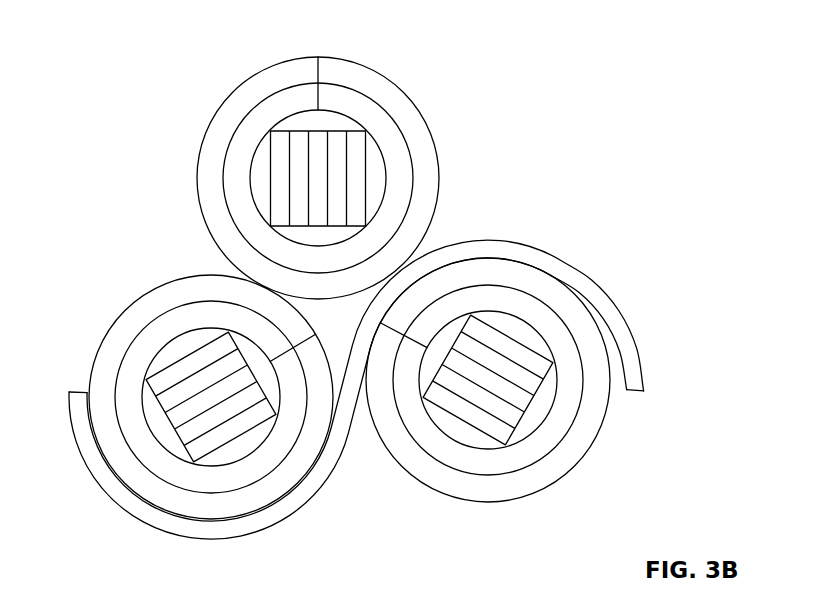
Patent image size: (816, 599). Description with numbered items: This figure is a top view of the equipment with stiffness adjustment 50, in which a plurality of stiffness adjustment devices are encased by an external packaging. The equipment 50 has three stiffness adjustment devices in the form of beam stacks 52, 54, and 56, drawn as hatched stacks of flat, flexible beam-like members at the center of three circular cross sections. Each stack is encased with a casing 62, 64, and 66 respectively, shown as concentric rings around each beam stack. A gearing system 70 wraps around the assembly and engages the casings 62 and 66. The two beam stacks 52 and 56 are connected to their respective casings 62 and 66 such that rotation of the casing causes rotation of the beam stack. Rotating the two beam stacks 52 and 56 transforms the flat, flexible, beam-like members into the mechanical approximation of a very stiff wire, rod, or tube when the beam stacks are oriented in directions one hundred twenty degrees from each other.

The equipment with stiffness adjustment 50 is at (500, 92).
The beam stack 52 is at (220, 435).
The beam stack 54 is at (357, 157).
The beam stack 56 is at (500, 435).
The casing 62 is at (112, 335).
The casing 64 is at (393, 93).
The casing 66 is at (565, 463).
The gearing system 70 is at (625, 332).